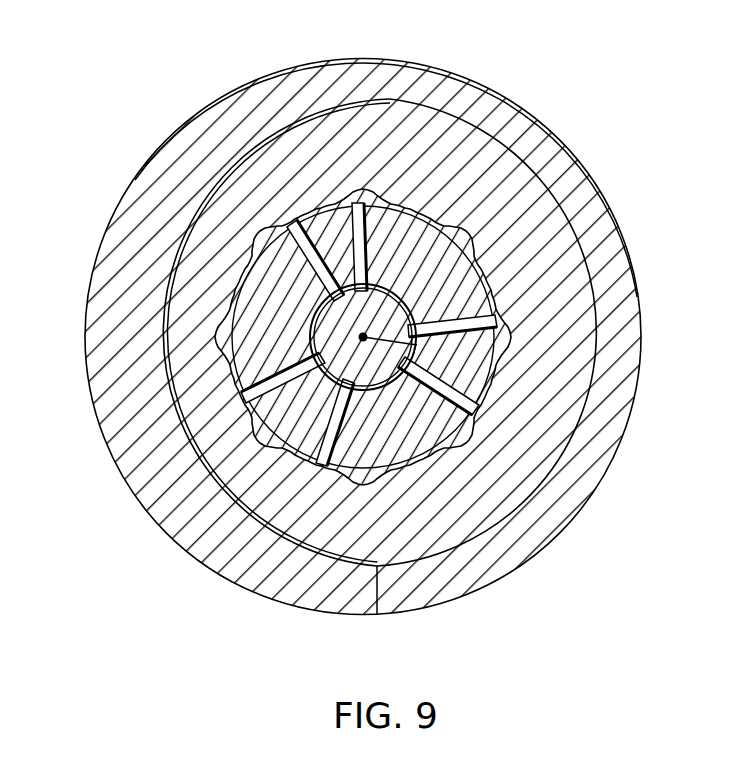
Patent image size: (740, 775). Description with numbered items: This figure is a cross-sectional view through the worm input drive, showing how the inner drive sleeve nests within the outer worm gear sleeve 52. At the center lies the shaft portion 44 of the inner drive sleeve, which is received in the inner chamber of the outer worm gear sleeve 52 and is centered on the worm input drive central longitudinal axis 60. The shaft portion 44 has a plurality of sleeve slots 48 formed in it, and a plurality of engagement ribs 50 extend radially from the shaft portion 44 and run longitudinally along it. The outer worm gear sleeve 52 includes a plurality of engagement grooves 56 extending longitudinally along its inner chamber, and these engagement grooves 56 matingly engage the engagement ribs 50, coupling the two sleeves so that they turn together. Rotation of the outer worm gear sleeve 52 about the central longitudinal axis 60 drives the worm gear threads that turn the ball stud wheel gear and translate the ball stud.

The shaft portion 44 is at (470, 232).
The sleeve slots 48 is at (290, 240).
The engagement ribs 50 is at (483, 178).
The outer worm gear sleeve 52 is at (115, 318).
The engagement grooves 56 is at (370, 282).
The worm input drive central longitudinal axis 60 is at (480, 363).